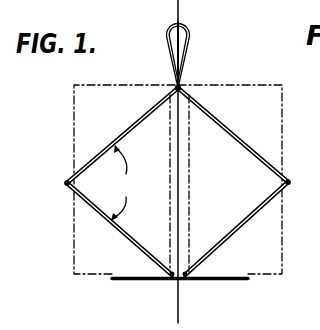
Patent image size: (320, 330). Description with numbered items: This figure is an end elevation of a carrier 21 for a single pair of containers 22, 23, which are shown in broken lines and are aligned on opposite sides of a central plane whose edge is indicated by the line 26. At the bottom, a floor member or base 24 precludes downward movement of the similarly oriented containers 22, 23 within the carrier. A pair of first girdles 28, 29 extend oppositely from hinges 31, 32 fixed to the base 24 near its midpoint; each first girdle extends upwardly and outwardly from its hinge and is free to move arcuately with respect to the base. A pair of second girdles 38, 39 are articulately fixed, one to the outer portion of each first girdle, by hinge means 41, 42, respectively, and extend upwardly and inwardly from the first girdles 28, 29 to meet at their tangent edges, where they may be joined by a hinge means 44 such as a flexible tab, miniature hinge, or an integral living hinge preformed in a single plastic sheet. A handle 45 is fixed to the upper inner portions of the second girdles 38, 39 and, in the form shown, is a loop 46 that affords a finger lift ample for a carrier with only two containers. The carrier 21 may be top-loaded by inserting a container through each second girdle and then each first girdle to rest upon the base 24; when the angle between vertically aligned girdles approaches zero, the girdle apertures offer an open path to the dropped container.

The carrier 21 is at (145, 70).
The container 22 is at (88, 82).
The container 23 is at (261, 84).
The floor member or base 24 is at (239, 281).
The line indicating edge of central plane 26 is at (179, 3).
The first girdle 28 is at (262, 210).
The first girdle 29 is at (121, 231).
The hinge 31 is at (173, 271).
The hinge 32 is at (184, 271).
The second girdle 38 is at (223, 124).
The second girdle 39 is at (103, 150).
The hinge means 41 is at (290, 183).
The hinge means 42 is at (66, 183).
The hinge means 44 is at (181, 87).
The handle 45 is at (189, 50).
The loop 46 is at (169, 44).